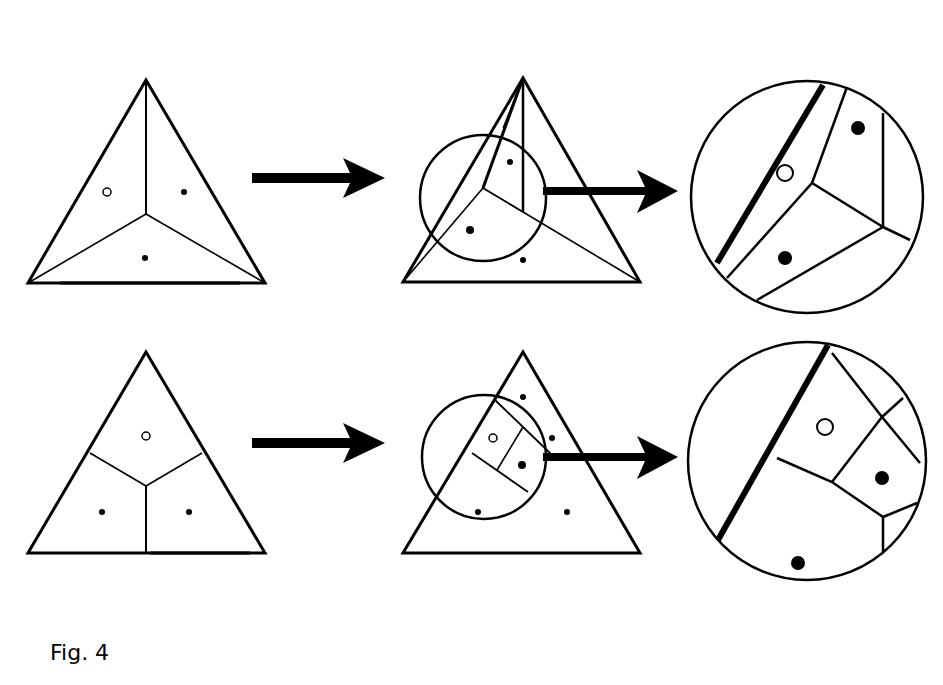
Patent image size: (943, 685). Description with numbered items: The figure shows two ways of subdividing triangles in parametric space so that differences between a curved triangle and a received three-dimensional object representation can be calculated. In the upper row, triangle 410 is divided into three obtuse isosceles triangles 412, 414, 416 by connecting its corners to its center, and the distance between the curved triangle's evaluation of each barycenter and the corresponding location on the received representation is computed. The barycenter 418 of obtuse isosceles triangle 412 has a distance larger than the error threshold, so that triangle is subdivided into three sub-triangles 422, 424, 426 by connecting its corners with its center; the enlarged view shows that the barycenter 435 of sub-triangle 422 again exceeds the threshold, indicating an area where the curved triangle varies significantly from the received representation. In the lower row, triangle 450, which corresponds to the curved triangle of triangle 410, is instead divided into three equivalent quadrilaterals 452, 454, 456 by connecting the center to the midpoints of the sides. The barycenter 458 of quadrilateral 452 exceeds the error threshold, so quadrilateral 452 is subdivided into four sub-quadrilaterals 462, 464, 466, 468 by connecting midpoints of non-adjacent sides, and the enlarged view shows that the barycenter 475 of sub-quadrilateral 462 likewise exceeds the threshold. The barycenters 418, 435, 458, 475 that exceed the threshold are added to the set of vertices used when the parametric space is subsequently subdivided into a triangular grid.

The triangle 410 is at (78, 283).
The obtuse isosceles triangle 412 is at (118, 168).
The obtuse isosceles triangle 414 is at (172, 168).
The obtuse isosceles triangle 416 is at (185, 263).
The barycenter 418 is at (102, 187).
The sub-triangle 422 is at (480, 172).
The sub-triangle 424 is at (513, 128).
The sub-triangle 426 is at (482, 218).
The barycenter 435 is at (788, 163).
The triangle 450 is at (87, 558).
The quadrilateral 452 is at (145, 407).
The quadrilateral 454 is at (110, 538).
The quadrilateral 456 is at (180, 542).
The barycenter 458 is at (140, 436).
The sub-quadrilateral 462 is at (497, 422).
The sub-quadrilateral 464 is at (543, 402).
The sub-quadrilateral 466 is at (565, 445).
The sub-quadrilateral 468 is at (512, 468).
The barycenter 475 is at (837, 420).